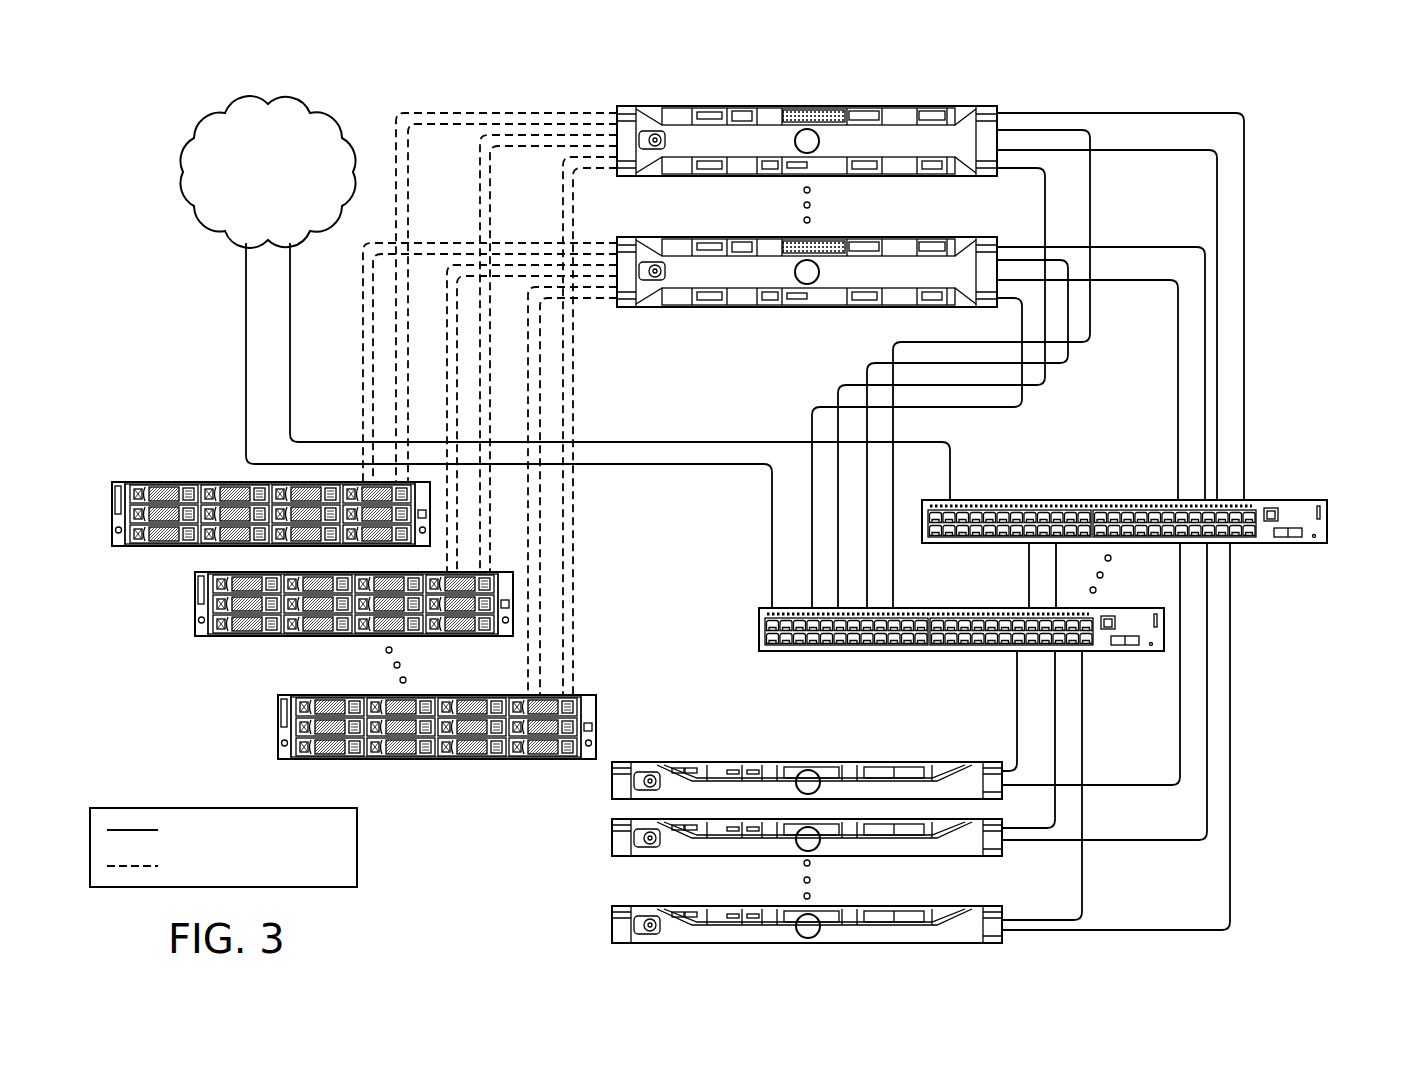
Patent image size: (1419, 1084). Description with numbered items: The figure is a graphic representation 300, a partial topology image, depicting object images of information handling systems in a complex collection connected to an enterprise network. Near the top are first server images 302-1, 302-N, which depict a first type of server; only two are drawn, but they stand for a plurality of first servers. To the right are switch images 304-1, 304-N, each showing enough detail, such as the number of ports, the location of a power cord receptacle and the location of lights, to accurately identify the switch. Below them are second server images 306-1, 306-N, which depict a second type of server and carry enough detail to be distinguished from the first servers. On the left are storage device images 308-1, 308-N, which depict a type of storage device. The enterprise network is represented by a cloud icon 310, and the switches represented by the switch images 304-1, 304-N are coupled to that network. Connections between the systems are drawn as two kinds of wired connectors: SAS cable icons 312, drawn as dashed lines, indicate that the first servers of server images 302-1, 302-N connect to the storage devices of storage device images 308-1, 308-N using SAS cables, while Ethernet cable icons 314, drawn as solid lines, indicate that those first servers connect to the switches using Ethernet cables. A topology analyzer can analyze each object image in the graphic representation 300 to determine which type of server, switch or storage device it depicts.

The graphic representation 300 is at (1361, 173).
The first server image 302-1 is at (820, 105).
The first server image 302-N is at (720, 310).
The switch image 304-1 is at (1305, 545).
The switch image 304-N is at (972, 653).
The second server image 306-1 is at (610, 791).
The second server image 306-N is at (610, 935).
The storage device image 308-1 is at (192, 481).
The storage device image 308-N is at (420, 762).
The cloud icon 310 is at (266, 102).
The SAS cable icon 312 is at (433, 104).
The Ethernet cable icon 314 is at (1181, 102).